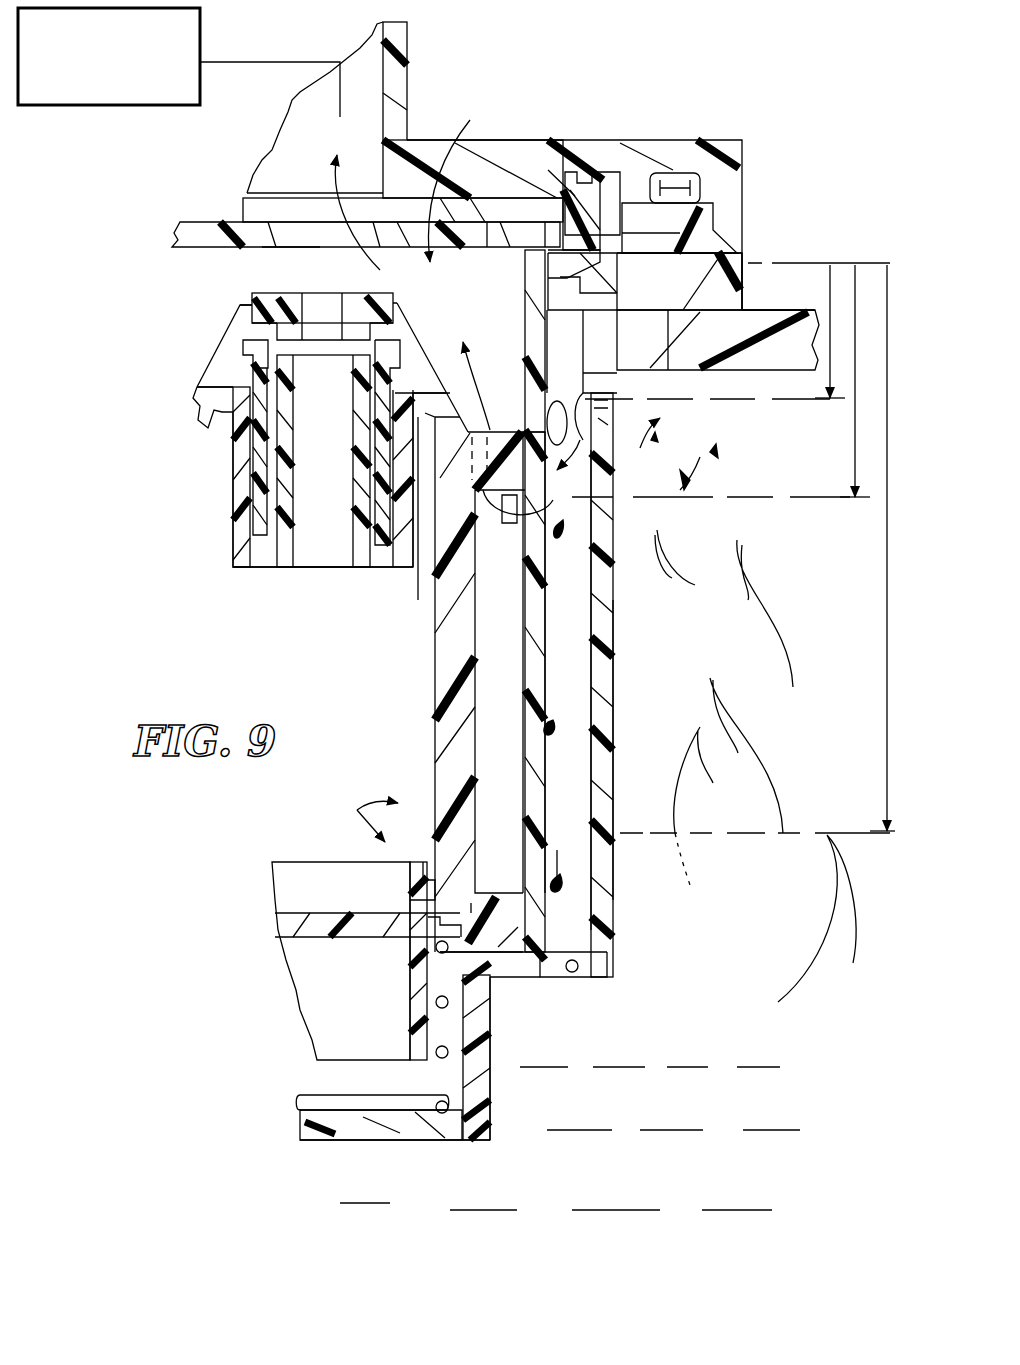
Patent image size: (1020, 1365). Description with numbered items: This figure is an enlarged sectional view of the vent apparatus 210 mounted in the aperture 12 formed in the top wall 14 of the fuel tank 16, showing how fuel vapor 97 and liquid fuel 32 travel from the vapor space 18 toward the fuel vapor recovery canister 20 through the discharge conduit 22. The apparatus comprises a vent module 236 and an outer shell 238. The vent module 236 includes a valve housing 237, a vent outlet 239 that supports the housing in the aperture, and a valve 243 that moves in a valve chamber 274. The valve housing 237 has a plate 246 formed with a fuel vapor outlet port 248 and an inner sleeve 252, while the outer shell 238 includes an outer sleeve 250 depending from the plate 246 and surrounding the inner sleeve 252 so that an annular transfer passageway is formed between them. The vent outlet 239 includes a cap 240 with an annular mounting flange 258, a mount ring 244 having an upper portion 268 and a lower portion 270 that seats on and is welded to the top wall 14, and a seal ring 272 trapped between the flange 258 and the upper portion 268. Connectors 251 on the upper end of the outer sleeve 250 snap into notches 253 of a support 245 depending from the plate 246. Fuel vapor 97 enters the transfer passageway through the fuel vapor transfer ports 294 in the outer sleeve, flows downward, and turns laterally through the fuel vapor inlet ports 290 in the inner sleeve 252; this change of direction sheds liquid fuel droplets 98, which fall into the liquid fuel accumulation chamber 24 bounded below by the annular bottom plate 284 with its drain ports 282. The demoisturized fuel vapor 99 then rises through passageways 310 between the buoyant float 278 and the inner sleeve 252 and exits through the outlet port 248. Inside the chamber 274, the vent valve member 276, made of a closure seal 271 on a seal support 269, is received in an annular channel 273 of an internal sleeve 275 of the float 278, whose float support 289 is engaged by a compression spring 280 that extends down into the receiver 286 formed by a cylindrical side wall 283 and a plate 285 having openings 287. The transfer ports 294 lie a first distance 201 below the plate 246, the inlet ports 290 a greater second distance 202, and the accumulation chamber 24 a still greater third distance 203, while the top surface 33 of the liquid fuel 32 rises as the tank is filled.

The aperture 12 is at (652, 368).
The top wall 14 is at (807, 305).
The fuel tank 16 is at (793, 310).
The vapor space 18 is at (755, 428).
The fuel vapor recovery canister 20 is at (90, 100).
The discharge conduit 22 is at (247, 62).
The liquid fuel accumulation chamber 24 is at (555, 932).
The liquid fuel 32 is at (778, 780).
The top surface 33 is at (690, 1068).
The fuel vapor 97 is at (637, 454).
The liquid fuel droplets 98 is at (562, 532).
The demoisturized fuel vapor 99 is at (334, 210).
The first distance 201 is at (833, 266).
The second distance 202 is at (855, 381).
The third distance 203 is at (887, 585).
The vent apparatus 210 is at (134, 330).
The vent module 236 is at (468, 100).
The valve housing 237 is at (218, 214).
The outer shell 238 is at (624, 640).
The vent outlet 239 is at (598, 140).
The cap 240 is at (412, 68).
The valve 243 is at (166, 372).
The mount ring 244 is at (745, 272).
The support 245 is at (583, 324).
The plate 246 is at (506, 238).
The fuel vapor outlet port 248 is at (270, 247).
The outer sleeve 250 is at (610, 726).
The connectors 251 is at (600, 268).
The inner sleeve 252 is at (538, 695).
The notch 253 is at (562, 262).
The annular mounting flange 258 is at (515, 140).
The upper portion 268 is at (700, 216).
The seal support 269 is at (285, 403).
The lower portion 270 is at (722, 290).
The closure seal 271 is at (360, 300).
The seal ring 272 is at (690, 178).
The annular channel 273 is at (276, 543).
The valve chamber 274 is at (473, 181).
The internal sleeve 275 is at (222, 566).
The vent valve member 276 is at (212, 322).
The buoyant float 278 is at (355, 810).
The compression spring 280 is at (302, 1097).
The drain ports 282 is at (572, 968).
The cylindrical side wall 283 is at (488, 1020).
The annular bottom plate 284 is at (508, 968).
The plate 285 is at (340, 1128).
The receiver 286 is at (510, 1102).
The openings 287 is at (425, 1132).
The float support 289 is at (270, 952).
The fuel vapor inlet port 290 is at (533, 525).
The fuel vapor transfer port 294 is at (600, 422).
The passageways 310 is at (470, 605).